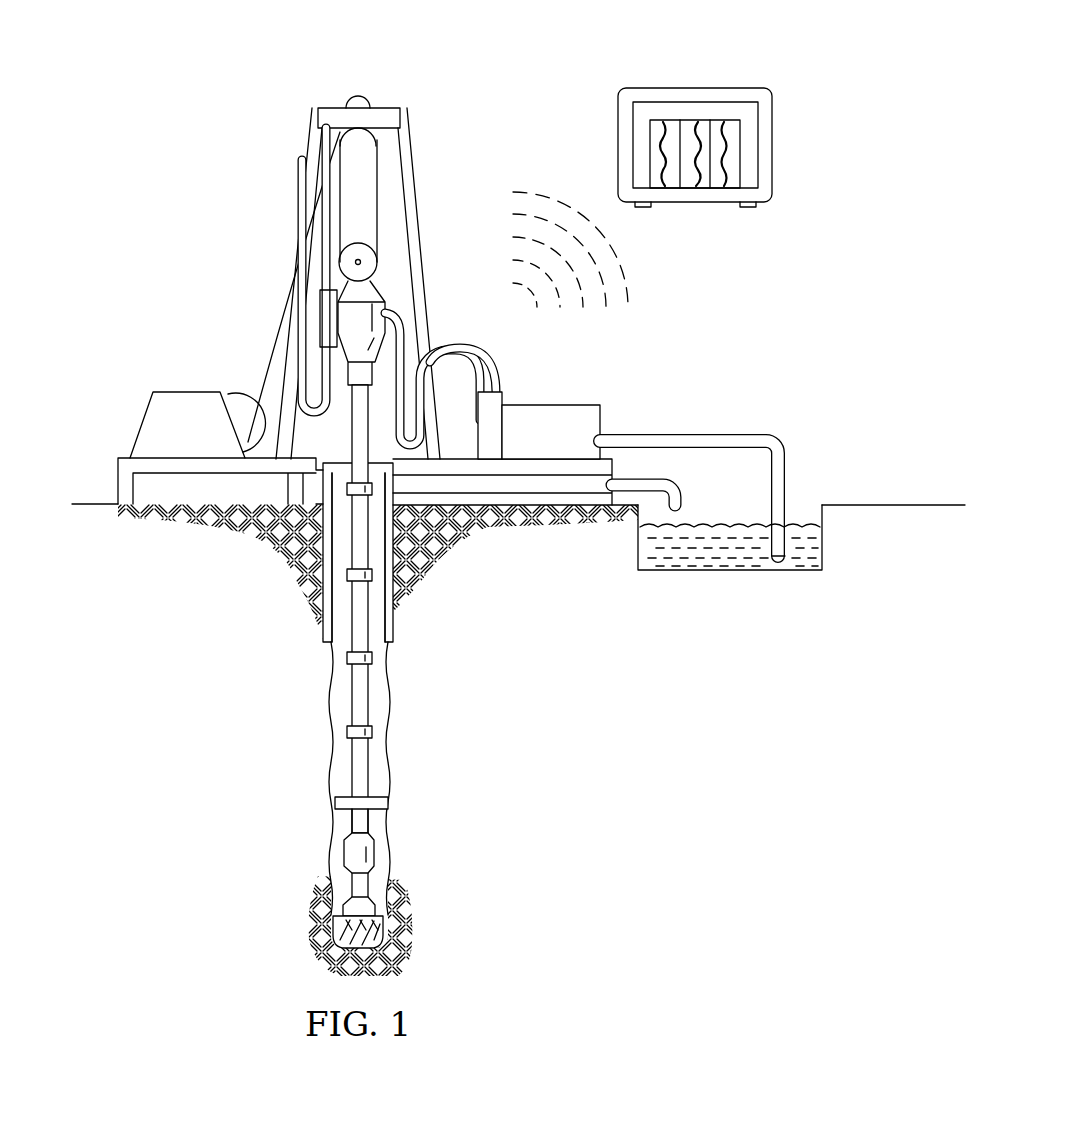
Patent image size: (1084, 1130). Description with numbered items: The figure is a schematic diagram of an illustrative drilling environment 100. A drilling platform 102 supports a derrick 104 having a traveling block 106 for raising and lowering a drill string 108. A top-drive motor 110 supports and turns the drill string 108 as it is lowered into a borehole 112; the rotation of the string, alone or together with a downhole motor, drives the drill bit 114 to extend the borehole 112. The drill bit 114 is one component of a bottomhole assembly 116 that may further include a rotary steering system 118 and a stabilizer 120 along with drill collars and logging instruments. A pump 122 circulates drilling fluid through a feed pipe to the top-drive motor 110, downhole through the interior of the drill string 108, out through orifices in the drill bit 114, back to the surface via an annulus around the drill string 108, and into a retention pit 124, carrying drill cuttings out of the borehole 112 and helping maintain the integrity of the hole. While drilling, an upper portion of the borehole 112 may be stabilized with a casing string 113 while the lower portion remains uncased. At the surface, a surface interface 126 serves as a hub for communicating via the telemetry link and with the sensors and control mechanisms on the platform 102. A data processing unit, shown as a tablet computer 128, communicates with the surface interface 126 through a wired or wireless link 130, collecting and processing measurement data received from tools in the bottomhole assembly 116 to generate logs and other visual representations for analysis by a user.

The drilling environment 100 is at (218, 80).
The drilling platform 102 is at (118, 474).
The derrick 104 is at (306, 160).
The traveling block 106 is at (347, 262).
The drill string 108 is at (330, 602).
The top-drive motor 110 is at (345, 318).
The borehole 112 is at (345, 556).
The casing string 113 is at (325, 527).
The drill bit 114 is at (384, 928).
The bottomhole assembly 116 is at (352, 822).
The rotary steering system 118 is at (372, 853).
The stabilizer 120 is at (337, 800).
The pump 122 is at (600, 412).
The retention pit 124 is at (726, 570).
The surface interface 126 is at (502, 396).
The tablet computer 128 is at (712, 88).
The wireless link 130 is at (556, 196).